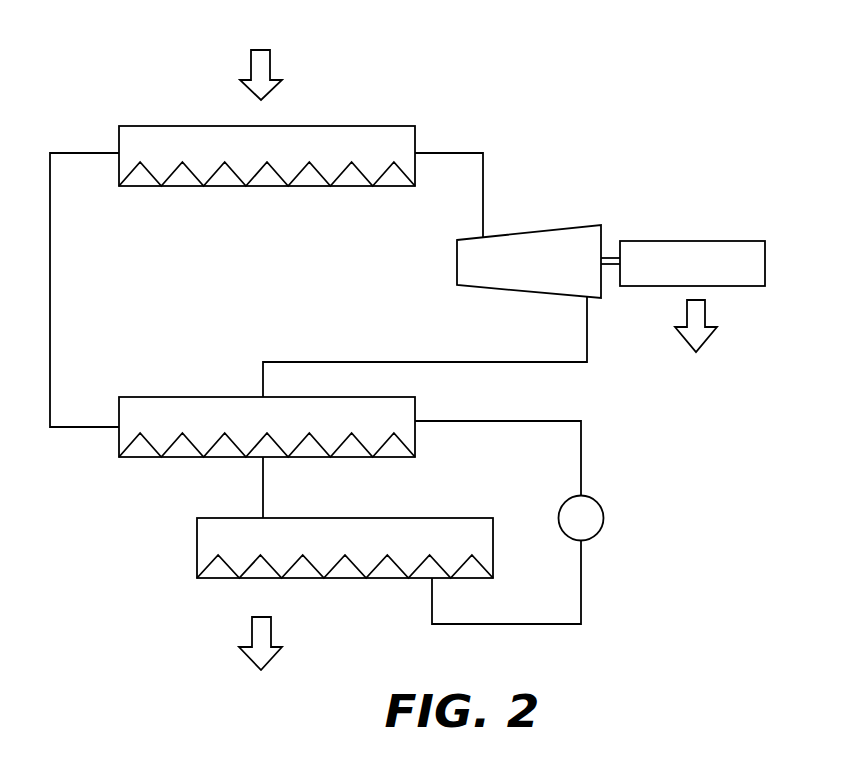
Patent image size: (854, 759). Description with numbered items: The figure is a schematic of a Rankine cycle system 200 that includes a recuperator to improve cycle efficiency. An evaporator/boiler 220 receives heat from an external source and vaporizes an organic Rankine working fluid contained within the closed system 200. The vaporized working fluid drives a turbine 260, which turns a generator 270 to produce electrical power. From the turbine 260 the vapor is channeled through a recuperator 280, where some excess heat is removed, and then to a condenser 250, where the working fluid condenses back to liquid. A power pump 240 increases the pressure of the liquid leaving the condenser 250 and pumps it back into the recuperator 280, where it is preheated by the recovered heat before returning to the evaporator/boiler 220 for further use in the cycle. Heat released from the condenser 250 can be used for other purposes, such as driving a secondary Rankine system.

The Rankine cycle system 200 is at (526, 64).
The evaporator/boiler 220 is at (157, 125).
The power pump 240 is at (592, 518).
The condenser 250 is at (216, 538).
The turbine 260 is at (545, 248).
The generator 270 is at (696, 253).
The recuperator 280 is at (175, 406).